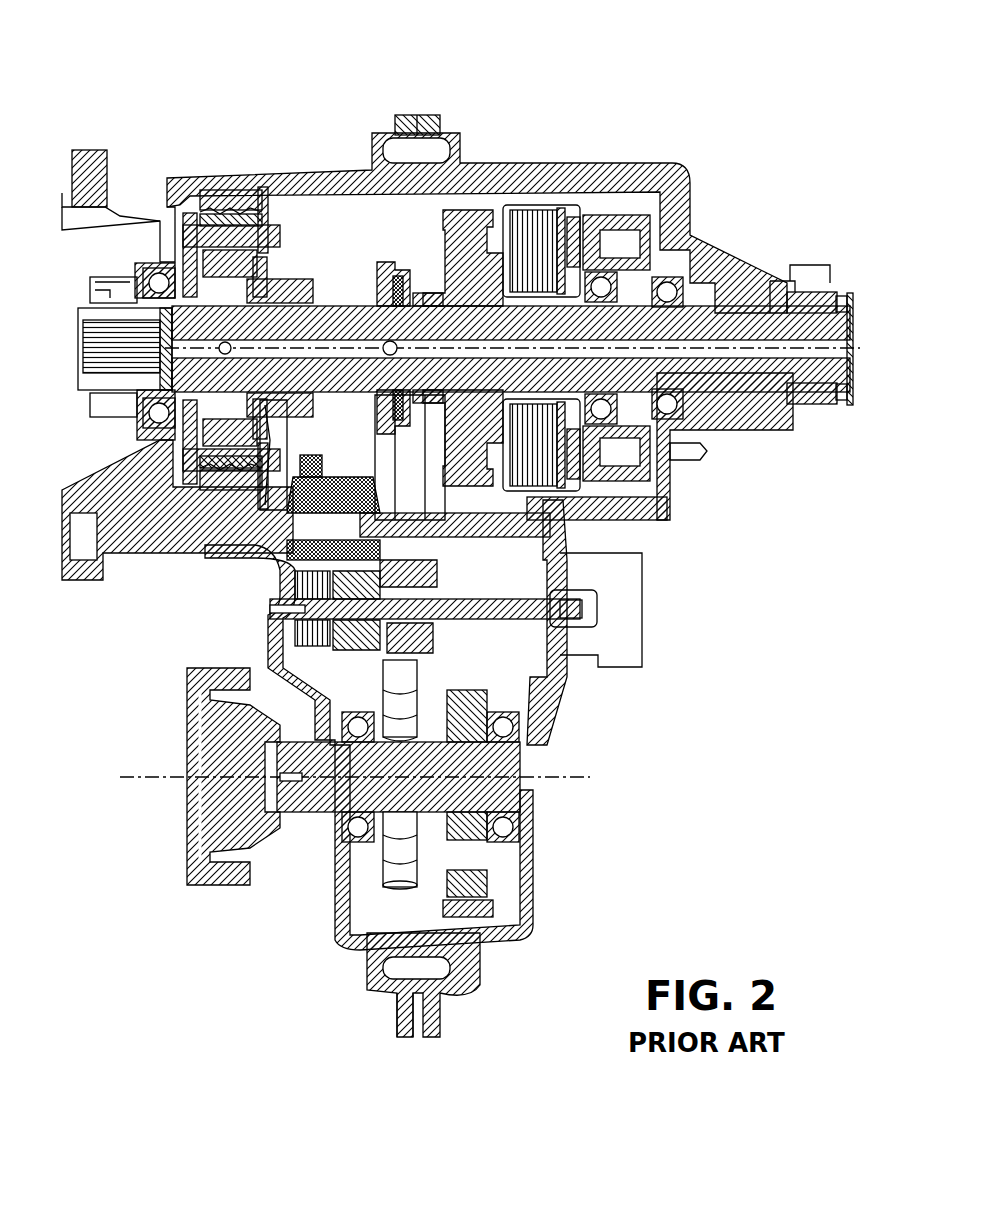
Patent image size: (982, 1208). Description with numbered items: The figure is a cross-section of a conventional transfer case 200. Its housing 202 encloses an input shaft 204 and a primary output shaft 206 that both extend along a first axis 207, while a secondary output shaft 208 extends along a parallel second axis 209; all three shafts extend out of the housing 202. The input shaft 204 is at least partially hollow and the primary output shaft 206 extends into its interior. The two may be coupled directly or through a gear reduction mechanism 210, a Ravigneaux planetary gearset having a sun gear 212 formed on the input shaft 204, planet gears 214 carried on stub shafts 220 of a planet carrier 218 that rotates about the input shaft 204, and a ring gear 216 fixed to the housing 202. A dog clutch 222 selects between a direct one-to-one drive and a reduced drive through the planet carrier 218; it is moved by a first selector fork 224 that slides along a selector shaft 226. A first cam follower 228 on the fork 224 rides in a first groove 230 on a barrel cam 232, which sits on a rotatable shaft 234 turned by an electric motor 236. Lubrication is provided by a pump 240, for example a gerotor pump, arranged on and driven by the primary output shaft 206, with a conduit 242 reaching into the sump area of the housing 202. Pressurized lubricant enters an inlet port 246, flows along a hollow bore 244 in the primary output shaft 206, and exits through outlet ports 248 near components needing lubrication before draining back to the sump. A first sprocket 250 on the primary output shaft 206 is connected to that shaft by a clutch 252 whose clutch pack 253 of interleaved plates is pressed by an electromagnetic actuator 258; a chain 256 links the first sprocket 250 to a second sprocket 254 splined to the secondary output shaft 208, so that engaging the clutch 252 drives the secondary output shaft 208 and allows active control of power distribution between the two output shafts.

The transfer case 200 is at (760, 96).
The housing 202 is at (672, 172).
The input shaft 204 is at (100, 296).
The primary output shaft 206 is at (810, 300).
The first axis 207 is at (740, 295).
The secondary output shaft 208 is at (210, 668).
The second axis 209 is at (160, 775).
The gear reduction mechanism 210 is at (285, 215).
The sun gear 212 is at (275, 258).
The planet gears 214 is at (216, 200).
The ring gear 216 is at (228, 192).
The planet carrier 218 is at (272, 222).
The stub shafts 220 is at (192, 205).
The dog clutch 222 is at (390, 292).
The first selector fork 224 is at (325, 490).
The selector shaft 226 is at (245, 560).
The first cam follower 228 is at (350, 595).
The first groove 230 is at (290, 605).
The barrel cam 232 is at (435, 570).
The rotatable shaft 234 is at (560, 612).
The electric motor 236 is at (655, 590).
The pump 240 is at (388, 260).
The conduit 242 is at (395, 452).
The hollow bore 244 is at (320, 485).
The inlet port 246 is at (392, 340).
The outlet ports 248 is at (480, 349).
The first sprocket 250 is at (450, 248).
The clutch 252 is at (570, 200).
The clutch pack 253 is at (538, 208).
The second sprocket 254 is at (477, 880).
The chain 256 is at (487, 905).
The electromagnetic actuator 258 is at (620, 212).